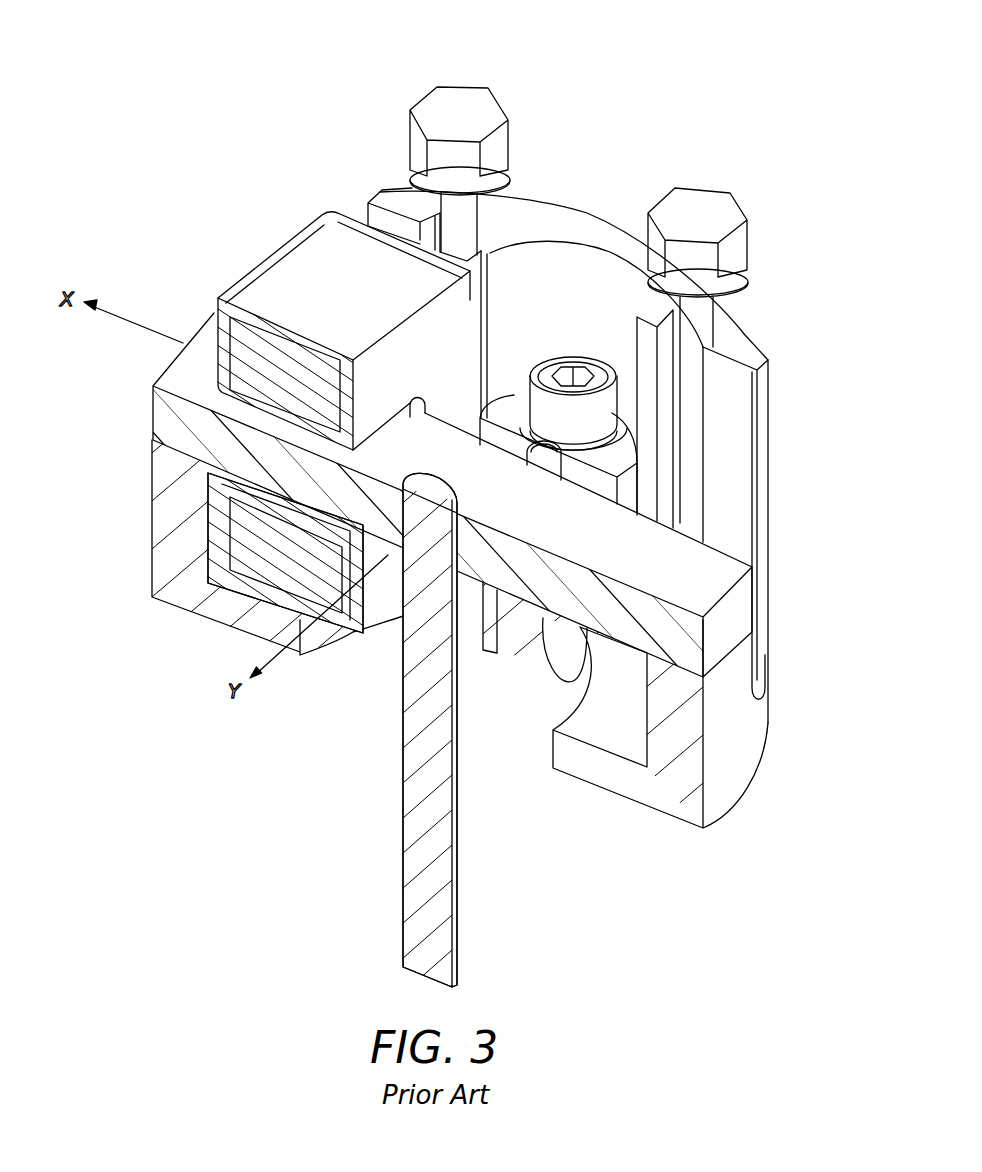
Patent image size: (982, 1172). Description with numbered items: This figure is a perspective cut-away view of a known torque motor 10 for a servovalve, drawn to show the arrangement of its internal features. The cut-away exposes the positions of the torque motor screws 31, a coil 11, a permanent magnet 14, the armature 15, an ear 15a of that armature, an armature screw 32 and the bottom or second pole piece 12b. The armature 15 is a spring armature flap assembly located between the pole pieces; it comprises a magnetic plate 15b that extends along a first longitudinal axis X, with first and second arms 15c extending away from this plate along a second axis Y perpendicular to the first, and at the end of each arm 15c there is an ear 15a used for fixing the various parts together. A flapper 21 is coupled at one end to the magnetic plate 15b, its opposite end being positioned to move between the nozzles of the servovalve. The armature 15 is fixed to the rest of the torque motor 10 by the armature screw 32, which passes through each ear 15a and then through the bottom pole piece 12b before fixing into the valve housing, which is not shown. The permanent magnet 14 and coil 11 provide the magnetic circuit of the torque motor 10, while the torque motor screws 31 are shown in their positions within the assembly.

The torque motor 10 is at (660, 52).
The coil 11 is at (292, 258).
The second pole piece 12b is at (742, 790).
The permanent magnet 14 is at (753, 348).
The armature 15 is at (491, 586).
The ear 15a is at (503, 410).
The magnetic plate 15b is at (173, 345).
The arm 15c is at (540, 467).
The flapper 21 is at (457, 878).
The torque motor screw 31 is at (463, 93).
The armature screw 32 is at (588, 358).